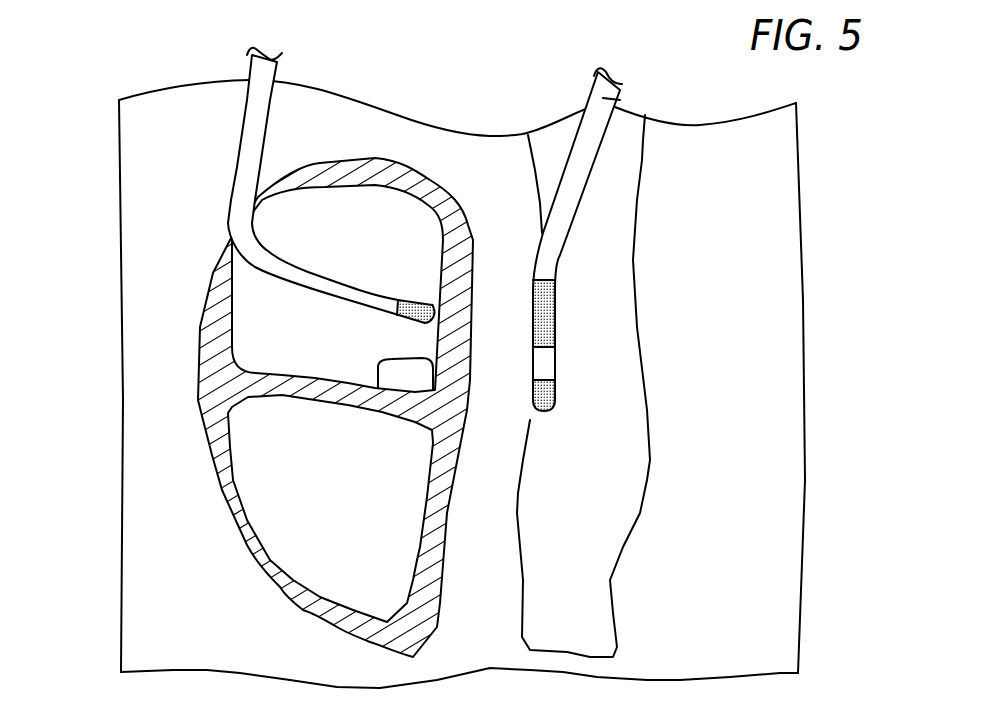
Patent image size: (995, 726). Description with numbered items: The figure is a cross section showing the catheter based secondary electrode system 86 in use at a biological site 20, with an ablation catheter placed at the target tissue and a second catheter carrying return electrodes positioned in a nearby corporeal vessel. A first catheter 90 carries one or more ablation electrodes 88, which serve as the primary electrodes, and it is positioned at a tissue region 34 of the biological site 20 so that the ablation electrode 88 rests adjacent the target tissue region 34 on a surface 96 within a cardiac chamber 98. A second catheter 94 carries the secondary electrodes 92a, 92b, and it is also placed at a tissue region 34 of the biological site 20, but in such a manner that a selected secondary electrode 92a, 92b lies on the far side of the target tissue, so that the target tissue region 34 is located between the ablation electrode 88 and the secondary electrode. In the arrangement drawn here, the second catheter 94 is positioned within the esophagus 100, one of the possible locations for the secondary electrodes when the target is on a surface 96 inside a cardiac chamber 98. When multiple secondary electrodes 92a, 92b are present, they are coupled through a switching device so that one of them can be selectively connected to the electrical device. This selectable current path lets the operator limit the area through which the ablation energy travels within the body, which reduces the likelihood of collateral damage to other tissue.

The biological site 20 is at (233, 525).
The tissue region 34 is at (447, 240).
The catheter based secondary electrode system 86 is at (812, 345).
The ablation electrode 88 is at (417, 305).
The first catheter 90 is at (243, 118).
The secondary electrode 92a is at (547, 393).
The secondary electrode 92b is at (545, 313).
The second catheter 94 is at (622, 99).
The surface 96 is at (378, 388).
The cardiac chamber 98 is at (289, 318).
The esophagus 100 is at (579, 543).